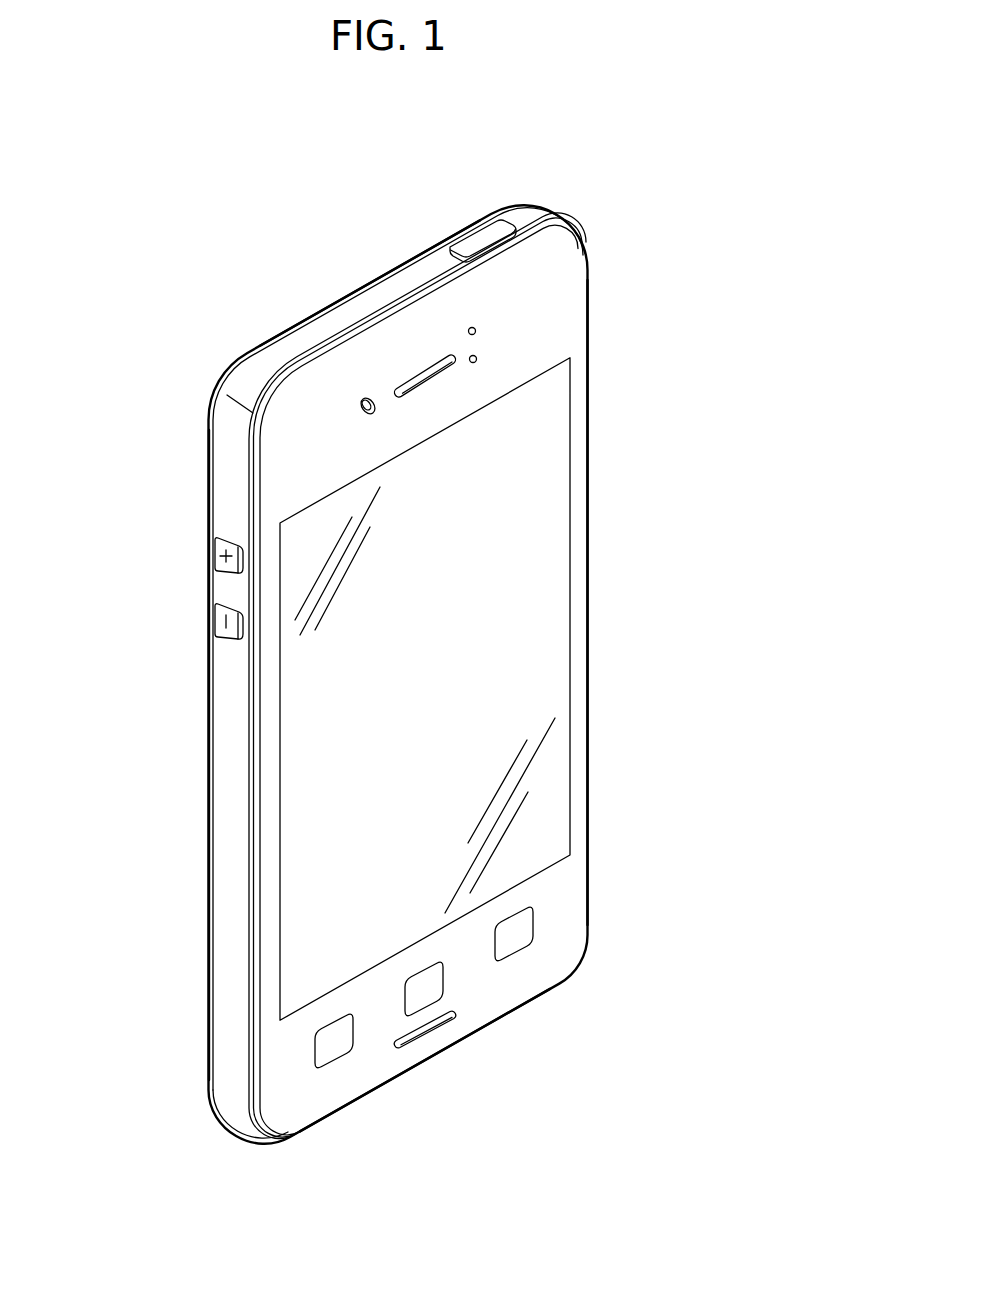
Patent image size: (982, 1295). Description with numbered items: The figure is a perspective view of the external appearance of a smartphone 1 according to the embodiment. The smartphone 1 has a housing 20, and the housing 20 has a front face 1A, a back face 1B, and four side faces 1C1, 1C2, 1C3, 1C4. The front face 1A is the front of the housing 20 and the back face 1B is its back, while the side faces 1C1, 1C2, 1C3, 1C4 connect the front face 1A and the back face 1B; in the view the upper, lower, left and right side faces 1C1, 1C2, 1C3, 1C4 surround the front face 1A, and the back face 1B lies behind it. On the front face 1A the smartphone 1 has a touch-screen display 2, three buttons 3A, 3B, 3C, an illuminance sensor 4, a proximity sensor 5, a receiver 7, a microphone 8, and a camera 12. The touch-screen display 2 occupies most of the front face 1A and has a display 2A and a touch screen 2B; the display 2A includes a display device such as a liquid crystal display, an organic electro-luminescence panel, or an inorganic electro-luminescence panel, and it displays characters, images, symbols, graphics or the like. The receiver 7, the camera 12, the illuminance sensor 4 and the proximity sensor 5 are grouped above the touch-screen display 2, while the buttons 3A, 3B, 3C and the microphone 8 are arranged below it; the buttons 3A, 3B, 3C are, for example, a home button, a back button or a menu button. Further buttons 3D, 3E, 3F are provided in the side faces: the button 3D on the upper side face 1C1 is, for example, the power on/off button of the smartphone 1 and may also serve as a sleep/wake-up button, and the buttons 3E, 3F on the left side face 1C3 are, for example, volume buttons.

The smartphone 1 is at (702, 288).
The front face 1A is at (303, 413).
The back face 1B is at (208, 463).
The side face 1C1 is at (412, 280).
The side face 1C2 is at (485, 1030).
The side face 1C3 is at (222, 877).
The side face 1C4 is at (592, 478).
The touch-screen display 2 is at (506, 680).
The display 2A is at (419, 680).
The touch screen 2B is at (552, 671).
The button 3A is at (337, 1043).
The button 3B is at (425, 997).
The button 3C is at (517, 938).
The button 3D is at (488, 238).
The button 3E is at (217, 558).
The button 3F is at (217, 625).
The illuminance sensor 4 is at (475, 323).
The proximity sensor 5 is at (478, 360).
The receiver 7 is at (413, 380).
The microphone 8 is at (408, 1040).
The camera 12 is at (370, 397).
The housing 20 is at (223, 497).